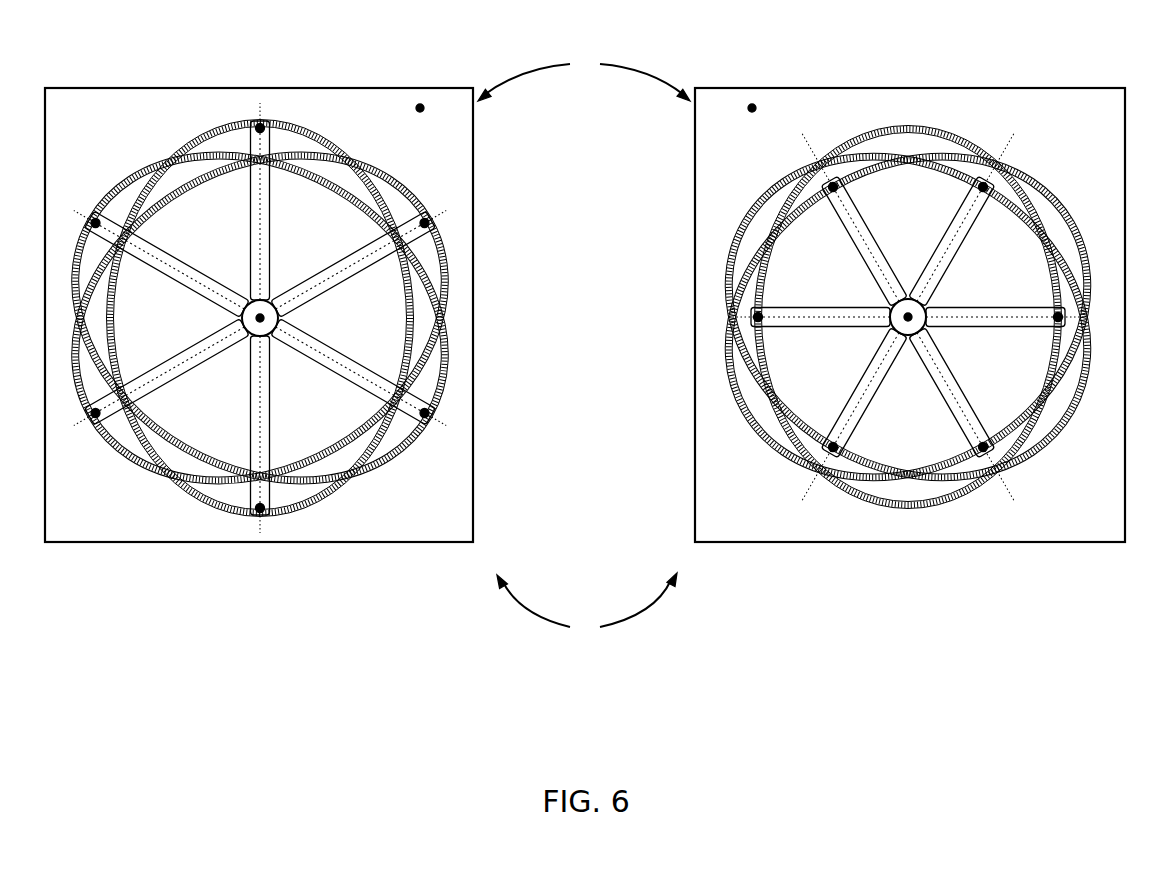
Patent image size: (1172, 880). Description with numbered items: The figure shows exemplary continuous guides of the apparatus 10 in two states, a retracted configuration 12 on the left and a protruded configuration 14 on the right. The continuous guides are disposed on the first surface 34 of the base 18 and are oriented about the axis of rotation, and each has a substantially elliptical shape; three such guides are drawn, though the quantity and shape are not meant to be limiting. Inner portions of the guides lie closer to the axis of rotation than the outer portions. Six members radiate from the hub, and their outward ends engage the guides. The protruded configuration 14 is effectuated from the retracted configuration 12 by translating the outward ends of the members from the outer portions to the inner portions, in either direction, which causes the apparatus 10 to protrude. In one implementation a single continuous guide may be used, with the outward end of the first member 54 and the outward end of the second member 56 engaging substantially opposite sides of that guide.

The apparatus 10 is at (587, 606).
The retracted configuration 12 is at (260, 705).
The protruded configuration 14 is at (908, 705).
The base 18 is at (584, 76).
The first surface 34 is at (421, 104).
The first member 54 is at (330, 385).
The second member 56 is at (177, 296).